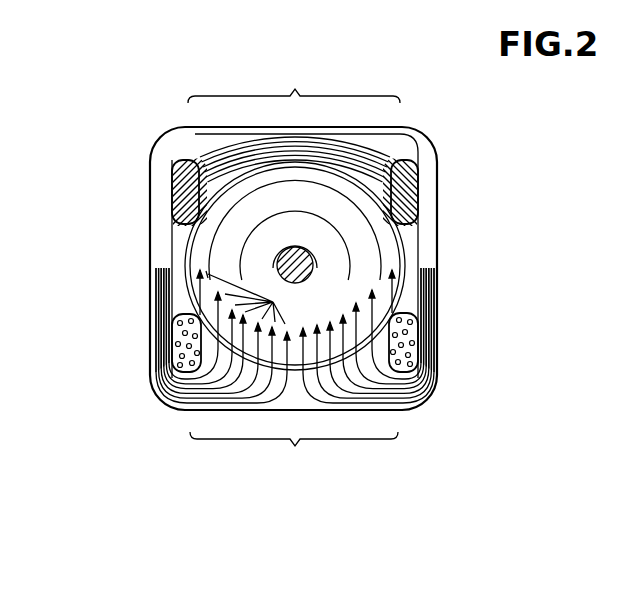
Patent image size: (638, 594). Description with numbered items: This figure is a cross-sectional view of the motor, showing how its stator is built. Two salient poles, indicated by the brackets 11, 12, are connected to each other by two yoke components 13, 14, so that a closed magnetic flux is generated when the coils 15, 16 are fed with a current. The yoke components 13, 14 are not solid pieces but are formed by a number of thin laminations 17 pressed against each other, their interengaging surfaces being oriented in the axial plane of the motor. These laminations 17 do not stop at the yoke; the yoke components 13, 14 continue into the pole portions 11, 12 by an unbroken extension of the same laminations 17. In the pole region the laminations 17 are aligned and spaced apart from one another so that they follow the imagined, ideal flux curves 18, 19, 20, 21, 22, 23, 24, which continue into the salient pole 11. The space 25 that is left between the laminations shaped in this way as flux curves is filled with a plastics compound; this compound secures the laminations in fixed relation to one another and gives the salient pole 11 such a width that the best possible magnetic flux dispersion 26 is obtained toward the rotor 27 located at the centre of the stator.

The salient pole 11 is at (294, 452).
The salient pole 12 is at (294, 81).
The yoke component 13 is at (164, 200).
The yoke component 14 is at (426, 201).
The coil 15 is at (402, 353).
The coil 16 is at (356, 154).
The laminations 17 is at (168, 323).
The flux curve 18 is at (205, 362).
The flux curve 19 is at (205, 395).
The flux curve 20 is at (217, 393).
The flux curve 21 is at (228, 400).
The flux curve 22 is at (243, 400).
The flux curve 23 is at (262, 396).
The flux curve 24 is at (273, 392).
The space 25 is at (270, 380).
The magnetic flux dispersion 26 is at (273, 302).
The rotor 27 is at (334, 281).